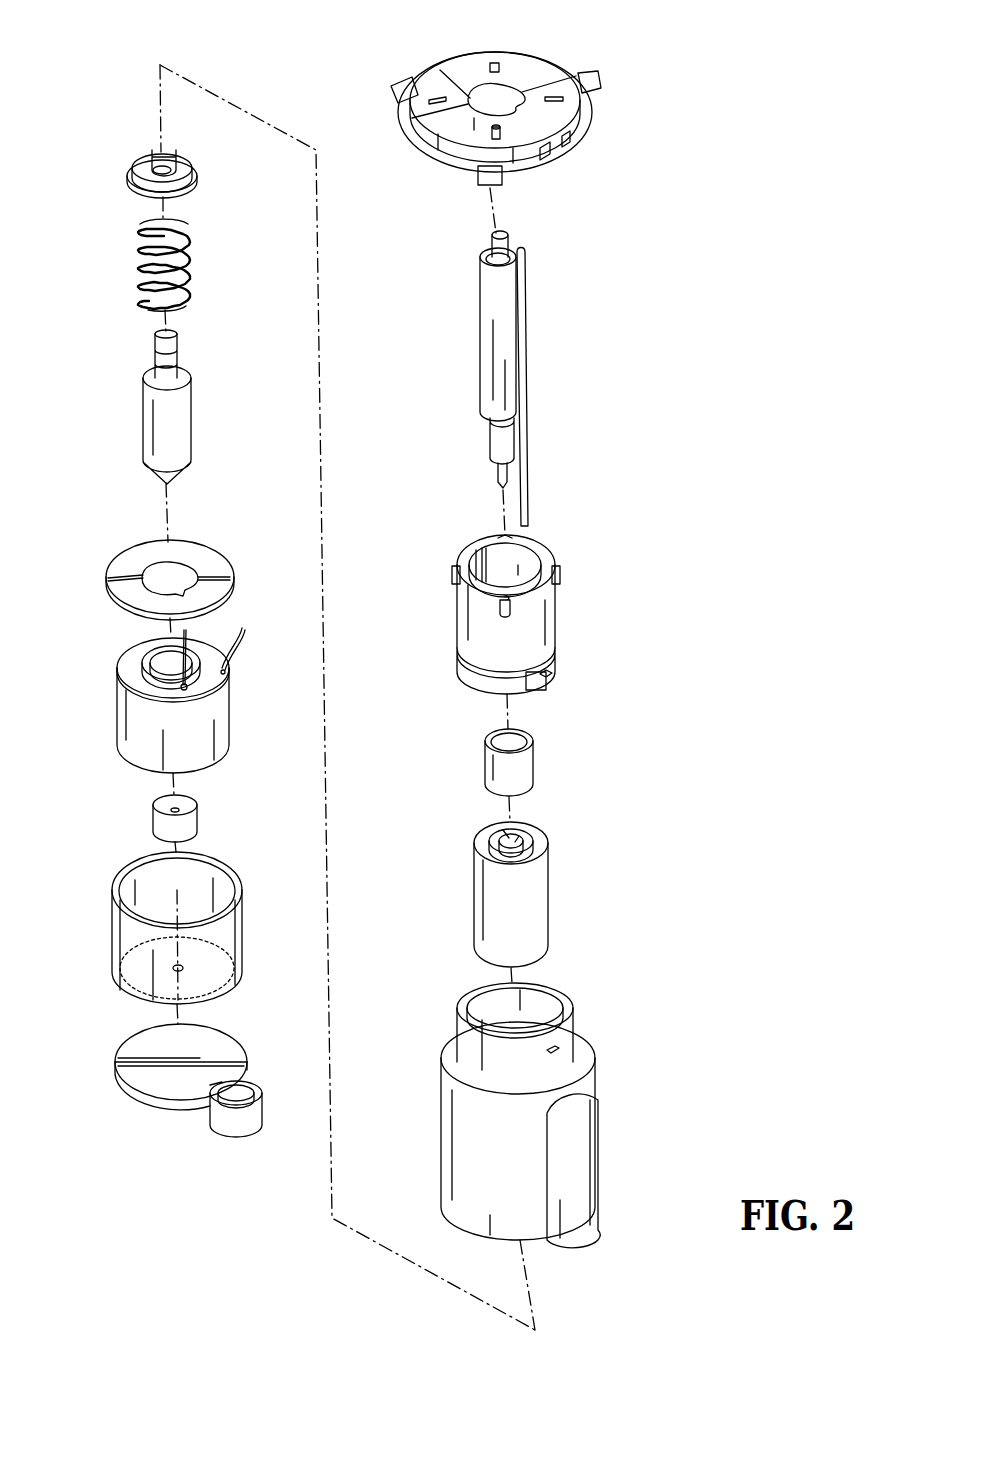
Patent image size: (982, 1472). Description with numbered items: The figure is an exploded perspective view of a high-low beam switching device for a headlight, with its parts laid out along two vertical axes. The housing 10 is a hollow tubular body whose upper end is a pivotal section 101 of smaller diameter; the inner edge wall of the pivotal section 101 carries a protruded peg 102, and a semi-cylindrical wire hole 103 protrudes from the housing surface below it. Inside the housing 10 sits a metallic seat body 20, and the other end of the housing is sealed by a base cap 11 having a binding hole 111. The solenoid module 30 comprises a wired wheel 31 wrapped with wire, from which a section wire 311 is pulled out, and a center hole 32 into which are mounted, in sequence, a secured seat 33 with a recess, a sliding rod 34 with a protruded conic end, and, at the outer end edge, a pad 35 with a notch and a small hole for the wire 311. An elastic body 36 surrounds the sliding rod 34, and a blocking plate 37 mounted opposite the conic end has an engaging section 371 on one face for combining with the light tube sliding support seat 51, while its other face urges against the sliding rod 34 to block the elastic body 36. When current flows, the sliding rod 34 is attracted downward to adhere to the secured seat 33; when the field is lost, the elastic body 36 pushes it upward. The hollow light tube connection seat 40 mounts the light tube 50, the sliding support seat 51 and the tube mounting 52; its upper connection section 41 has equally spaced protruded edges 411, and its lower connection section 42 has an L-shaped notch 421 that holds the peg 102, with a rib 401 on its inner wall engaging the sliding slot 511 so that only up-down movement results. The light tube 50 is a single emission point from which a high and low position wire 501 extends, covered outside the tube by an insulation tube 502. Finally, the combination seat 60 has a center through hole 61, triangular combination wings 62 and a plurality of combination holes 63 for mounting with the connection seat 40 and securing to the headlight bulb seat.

The housing 10 is at (564, 1088).
The pivotal section 101 is at (569, 999).
The protruded peg 102 is at (556, 1052).
The wire hole 103 is at (588, 1141).
The base cap 11 is at (213, 1104).
The binding hole 111 is at (245, 1094).
The seat body 20 is at (112, 921).
The solenoid module 30 is at (158, 702).
The wired wheel 31 is at (130, 766).
The section wire 311 is at (226, 651).
The center hole 32 is at (150, 656).
The secured seat 33 is at (200, 831).
The sliding rod 34 is at (192, 409).
The pad 35 is at (108, 548).
The elastic body 36 is at (135, 250).
The blocking plate 37 is at (175, 141).
The engaging section 371 is at (186, 166).
The light tube connection seat 40 is at (507, 589).
The rib 401 is at (504, 562).
The connection section 41 is at (457, 554).
The protruded edge 411 is at (452, 574).
The connection section 42 is at (516, 671).
The L-shaped notch 421 is at (548, 681).
The light tube 50 is at (502, 378).
The high and low position wire 501 is at (500, 478).
The insulation tube 502 is at (526, 330).
The light tube sliding support seat 51 is at (504, 894).
The sliding slot 511 is at (488, 830).
The tube mounting 52 is at (540, 761).
The combination seat 60 is at (506, 126).
The center through hole 61 is at (510, 98).
The combination wing 62 is at (405, 83).
The combination holes 63 is at (493, 63).